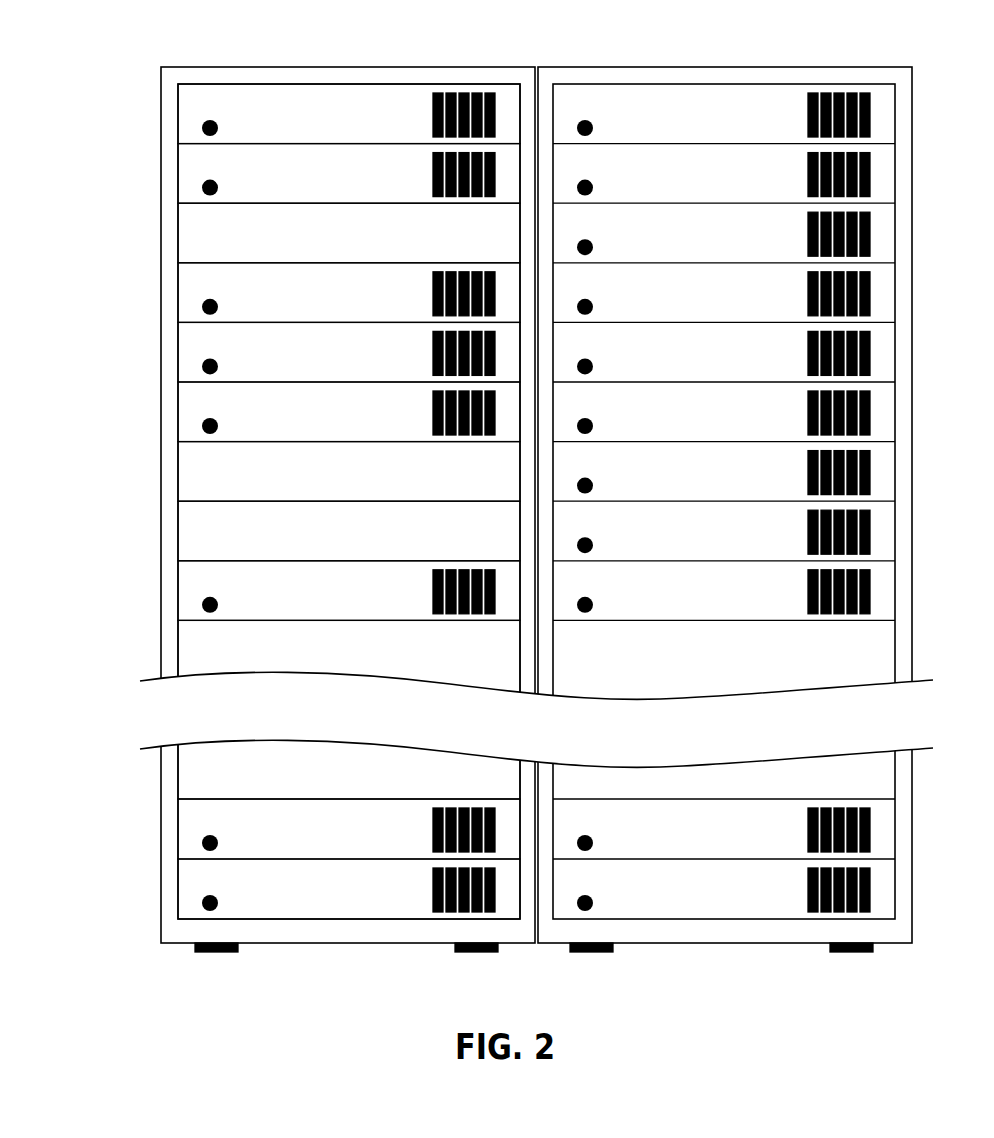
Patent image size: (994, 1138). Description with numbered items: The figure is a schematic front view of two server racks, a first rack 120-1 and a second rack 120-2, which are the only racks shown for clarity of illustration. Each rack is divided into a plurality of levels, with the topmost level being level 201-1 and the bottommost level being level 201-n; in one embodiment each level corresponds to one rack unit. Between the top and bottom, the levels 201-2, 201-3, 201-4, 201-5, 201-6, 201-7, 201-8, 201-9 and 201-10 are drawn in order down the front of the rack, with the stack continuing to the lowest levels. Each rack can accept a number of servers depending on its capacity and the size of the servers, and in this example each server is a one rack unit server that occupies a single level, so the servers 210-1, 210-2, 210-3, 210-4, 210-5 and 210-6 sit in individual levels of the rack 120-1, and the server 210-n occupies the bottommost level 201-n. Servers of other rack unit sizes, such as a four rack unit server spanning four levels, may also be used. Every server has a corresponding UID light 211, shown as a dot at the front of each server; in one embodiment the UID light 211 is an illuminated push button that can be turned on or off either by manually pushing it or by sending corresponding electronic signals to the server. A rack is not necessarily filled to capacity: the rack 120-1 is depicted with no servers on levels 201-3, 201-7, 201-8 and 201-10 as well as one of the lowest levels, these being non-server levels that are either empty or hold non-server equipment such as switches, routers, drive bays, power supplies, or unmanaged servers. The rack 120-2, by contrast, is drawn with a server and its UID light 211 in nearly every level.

The rack 120-1 is at (287, 67).
The rack 120-2 is at (628, 67).
The level 201-1 is at (287, 114).
The level 201-2 is at (287, 174).
The level 201-3 is at (287, 233).
The level 201-4 is at (287, 293).
The level 201-5 is at (287, 352).
The level 201-6 is at (287, 412).
The level 201-7 is at (287, 472).
The level 201-8 is at (287, 531).
The level 201-9 is at (287, 591).
The level 201-10 is at (278, 656).
The level 201-n is at (282, 889).
The server 210-1 is at (360, 123).
The server 210-2 is at (360, 183).
The server 210-3 is at (360, 302).
The server 210-4 is at (360, 361).
The server 210-5 is at (360, 421).
The server 210-6 is at (365, 600).
The server 210-n is at (346, 898).
The UID light 211 is at (211, 120).